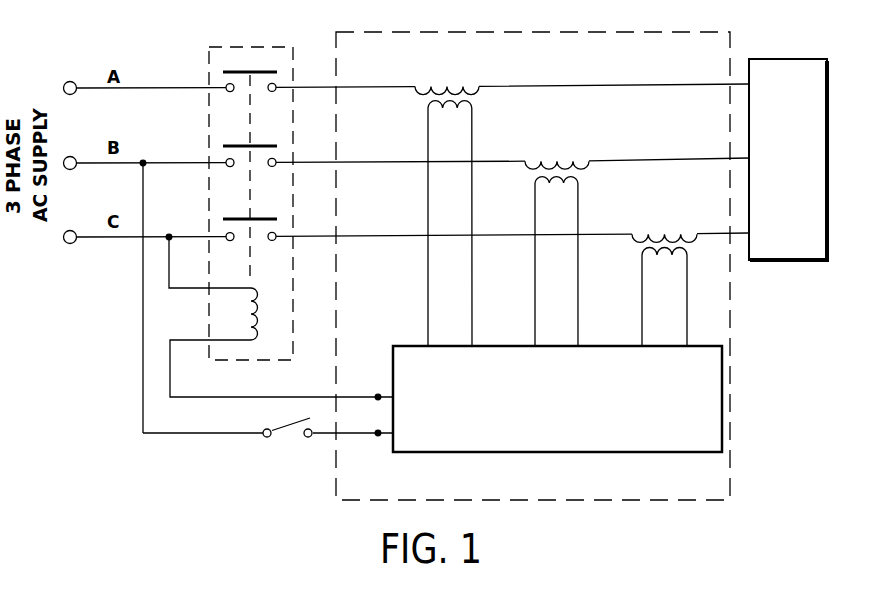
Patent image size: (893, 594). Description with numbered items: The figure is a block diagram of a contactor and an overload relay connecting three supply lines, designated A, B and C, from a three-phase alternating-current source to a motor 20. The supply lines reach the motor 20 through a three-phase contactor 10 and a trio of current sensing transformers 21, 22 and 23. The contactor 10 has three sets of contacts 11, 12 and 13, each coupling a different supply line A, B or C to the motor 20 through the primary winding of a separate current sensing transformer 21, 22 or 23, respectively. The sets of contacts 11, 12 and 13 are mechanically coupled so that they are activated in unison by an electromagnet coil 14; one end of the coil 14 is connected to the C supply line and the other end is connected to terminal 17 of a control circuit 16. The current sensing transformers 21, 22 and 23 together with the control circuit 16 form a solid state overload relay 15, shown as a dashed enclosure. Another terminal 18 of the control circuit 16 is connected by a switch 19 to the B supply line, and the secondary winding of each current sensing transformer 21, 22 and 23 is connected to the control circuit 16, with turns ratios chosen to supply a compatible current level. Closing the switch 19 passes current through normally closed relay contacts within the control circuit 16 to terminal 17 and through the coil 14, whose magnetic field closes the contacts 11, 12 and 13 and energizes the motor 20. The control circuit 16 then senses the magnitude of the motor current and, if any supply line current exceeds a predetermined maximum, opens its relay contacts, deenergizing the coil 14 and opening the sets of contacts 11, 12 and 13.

The three-phase contactor 10 is at (275, 208).
The set of contacts 11 is at (243, 91).
The set of contacts 12 is at (243, 166).
The set of contacts 13 is at (243, 241).
The electromagnet coil 14 is at (249, 344).
The solid state overload relay 15 is at (502, 278).
The control circuit 16 is at (604, 453).
The terminal 17 is at (378, 394).
The terminal 18 is at (378, 437).
The switch 19 is at (287, 438).
The motor 20 is at (746, 61).
The current sensing transformer 21 is at (455, 85).
The current sensing transformer 22 is at (570, 159).
The current sensing transformer 23 is at (680, 232).